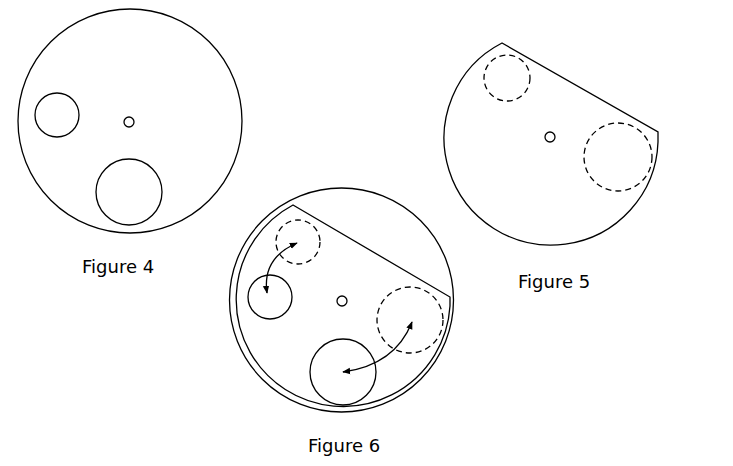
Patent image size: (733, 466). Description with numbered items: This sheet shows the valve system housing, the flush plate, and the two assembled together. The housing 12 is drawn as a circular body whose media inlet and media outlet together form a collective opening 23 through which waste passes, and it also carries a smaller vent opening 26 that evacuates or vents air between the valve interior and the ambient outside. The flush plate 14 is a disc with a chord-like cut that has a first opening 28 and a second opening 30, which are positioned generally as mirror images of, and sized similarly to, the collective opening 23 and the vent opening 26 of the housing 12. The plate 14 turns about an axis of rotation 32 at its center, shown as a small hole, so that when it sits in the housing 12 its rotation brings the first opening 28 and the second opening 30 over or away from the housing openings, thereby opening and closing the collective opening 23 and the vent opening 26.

In FIG. 4, the housing 12 is at (188, 68).
In FIG. 6, the housing 12 is at (367, 222).
In FIG. 5, the flush plate 14 is at (597, 222).
In FIG. 6, the flush plate 14 is at (265, 343).
In FIG. 4, the collective opening 23 is at (118, 201).
In FIG. 6, the collective opening 23 is at (345, 388).
In FIG. 4, the vent opening 26 is at (46, 124).
In FIG. 6, the vent opening 26 is at (270, 298).
In FIG. 5, the first opening 28 is at (607, 166).
In FIG. 6, the first opening 28 is at (425, 322).
In FIG. 5, the second opening 30 is at (496, 87).
In FIG. 6, the second opening 30 is at (297, 240).
In FIG. 5, the axis of rotation 32 is at (553, 134).